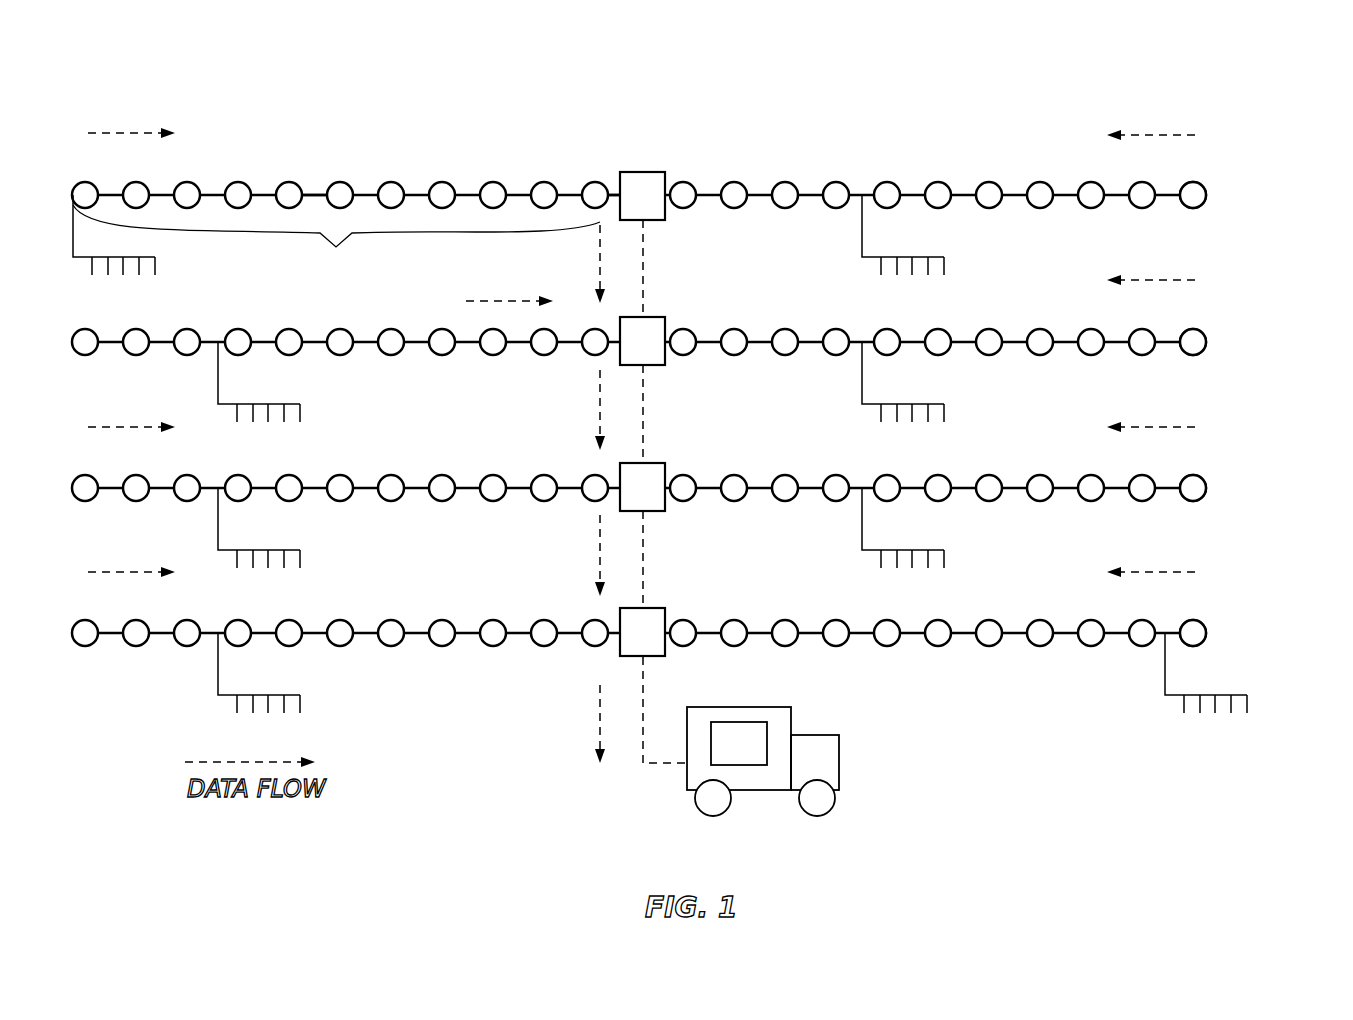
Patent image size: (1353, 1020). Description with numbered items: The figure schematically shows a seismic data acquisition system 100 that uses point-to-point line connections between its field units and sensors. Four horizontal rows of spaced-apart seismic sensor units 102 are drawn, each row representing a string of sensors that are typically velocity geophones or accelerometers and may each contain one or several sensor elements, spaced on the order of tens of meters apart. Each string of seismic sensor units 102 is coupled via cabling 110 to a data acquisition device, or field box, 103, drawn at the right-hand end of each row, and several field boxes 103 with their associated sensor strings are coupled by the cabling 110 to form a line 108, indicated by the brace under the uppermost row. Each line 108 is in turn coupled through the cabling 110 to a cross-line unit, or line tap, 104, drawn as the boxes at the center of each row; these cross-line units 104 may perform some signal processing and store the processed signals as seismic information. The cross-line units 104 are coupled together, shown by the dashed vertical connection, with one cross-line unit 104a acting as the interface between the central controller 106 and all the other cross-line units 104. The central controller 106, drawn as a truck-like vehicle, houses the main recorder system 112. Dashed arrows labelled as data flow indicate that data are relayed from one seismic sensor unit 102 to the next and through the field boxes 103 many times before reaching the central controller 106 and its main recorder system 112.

The seismic data acquisition system 100 is at (272, 66).
The seismic sensor unit 102 is at (155, 262).
The data acquisition device (field box) 103 is at (1198, 193).
The cross-line unit (line tap) 104 is at (655, 172).
The interface cross-line unit 104a is at (655, 608).
The central controller 106 is at (786, 745).
The line 108 is at (340, 232).
The cabling 110 is at (313, 205).
The main recorder system 112 is at (745, 722).